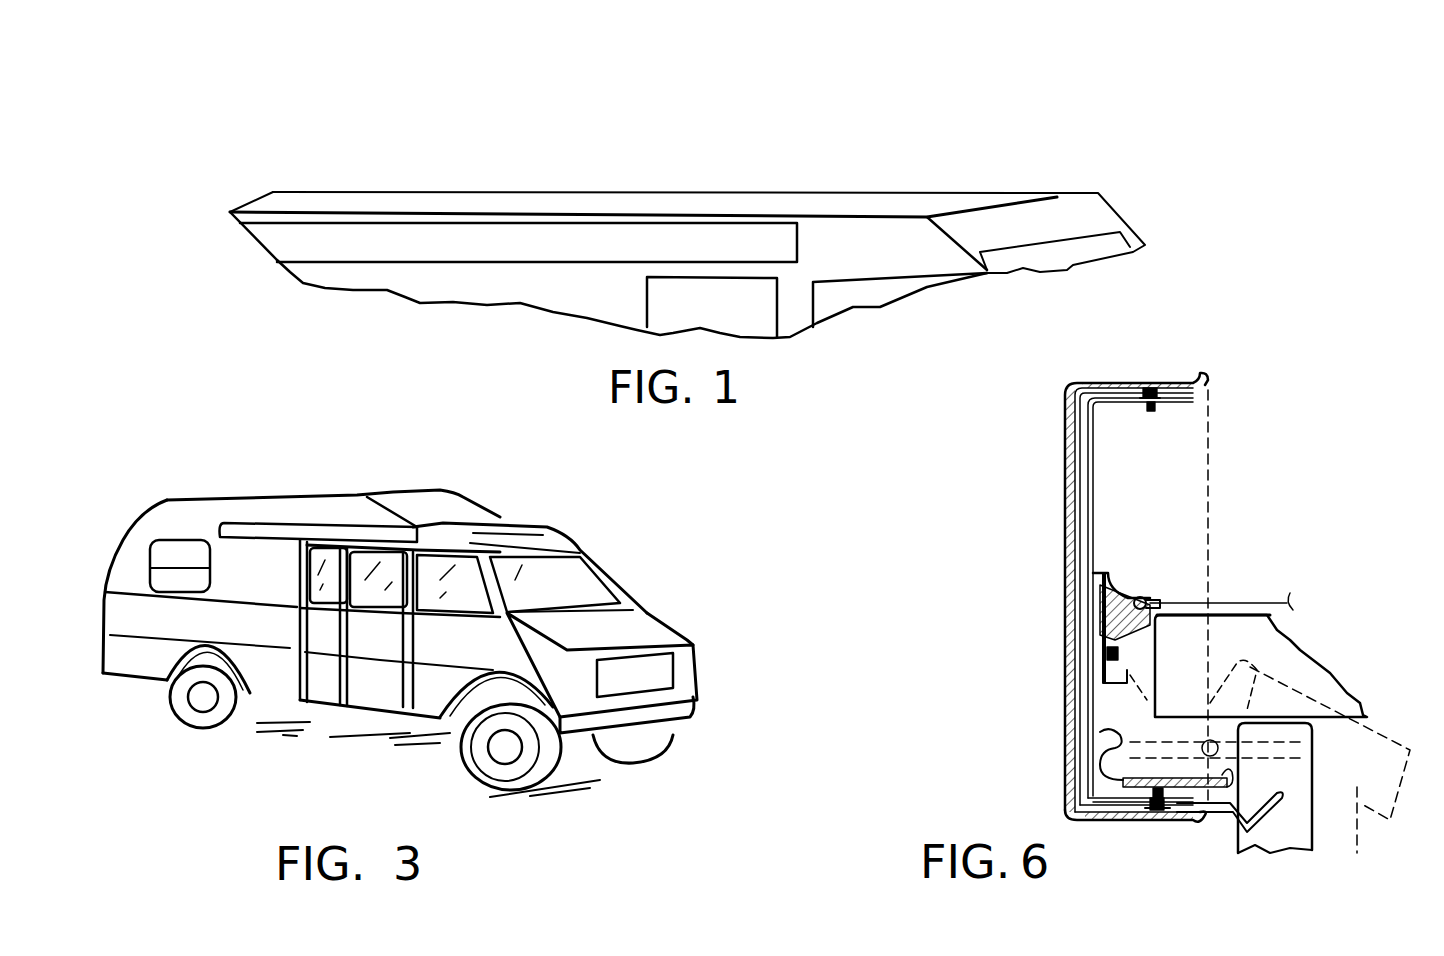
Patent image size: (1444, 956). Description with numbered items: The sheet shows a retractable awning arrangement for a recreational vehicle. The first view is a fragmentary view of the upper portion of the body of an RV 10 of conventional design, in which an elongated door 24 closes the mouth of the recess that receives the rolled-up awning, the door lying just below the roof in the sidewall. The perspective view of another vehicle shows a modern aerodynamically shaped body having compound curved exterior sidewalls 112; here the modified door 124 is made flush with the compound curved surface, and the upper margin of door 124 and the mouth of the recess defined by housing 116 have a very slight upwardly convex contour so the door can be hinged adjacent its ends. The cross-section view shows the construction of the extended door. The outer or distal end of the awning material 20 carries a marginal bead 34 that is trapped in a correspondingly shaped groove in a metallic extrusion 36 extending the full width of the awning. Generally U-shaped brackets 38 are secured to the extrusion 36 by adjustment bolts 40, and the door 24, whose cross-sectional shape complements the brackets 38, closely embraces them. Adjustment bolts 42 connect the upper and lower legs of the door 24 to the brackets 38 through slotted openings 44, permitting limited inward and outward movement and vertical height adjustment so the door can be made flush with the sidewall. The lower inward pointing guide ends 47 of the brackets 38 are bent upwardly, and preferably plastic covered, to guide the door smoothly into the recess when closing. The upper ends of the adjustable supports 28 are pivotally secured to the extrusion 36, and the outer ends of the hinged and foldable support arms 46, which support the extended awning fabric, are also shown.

In FIG. 1, the RV 10 is at (662, 200).
In FIG. 1, the door 24 is at (495, 242).
In FIG. 6, the door 24 is at (1065, 497).
In FIG. 3, the compound curved exterior sidewalls 112 is at (178, 520).
In FIG. 3, the door 124 is at (247, 530).
In FIG. 3, the housing 116 is at (320, 523).
In FIG. 6, the U-shaped brackets 38 is at (1088, 475).
In FIG. 6, the slotted openings 44 is at (1142, 387).
In FIG. 6, the adjustment bolts 42 is at (1151, 413).
In FIG. 6, the metallic extrusion 36 is at (1103, 580).
In FIG. 6, the marginal bead 34 is at (1142, 597).
In FIG. 6, the awning material 20 is at (1187, 603).
In FIG. 6, the adjustment bolts 40 is at (1118, 653).
In FIG. 6, the hinged and foldable support arms 46 is at (1317, 663).
In FIG. 6, the adjustable supports 28 is at (1297, 817).
In FIG. 6, the guide ends 47 is at (1270, 810).